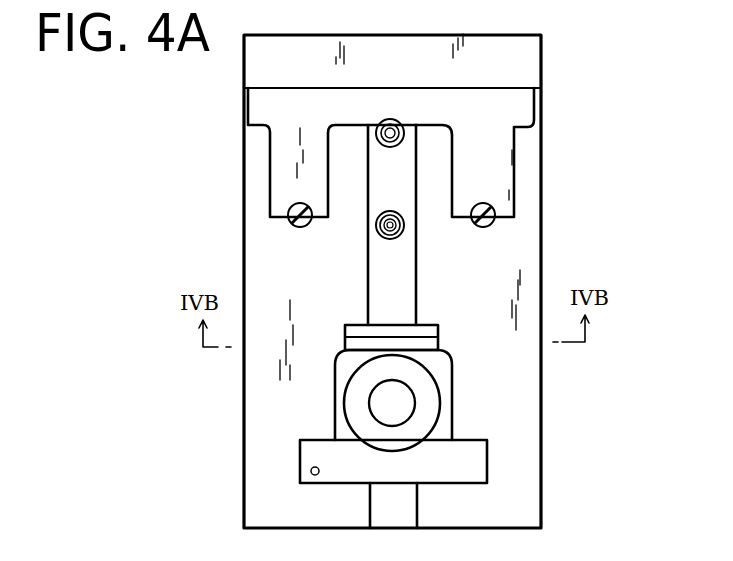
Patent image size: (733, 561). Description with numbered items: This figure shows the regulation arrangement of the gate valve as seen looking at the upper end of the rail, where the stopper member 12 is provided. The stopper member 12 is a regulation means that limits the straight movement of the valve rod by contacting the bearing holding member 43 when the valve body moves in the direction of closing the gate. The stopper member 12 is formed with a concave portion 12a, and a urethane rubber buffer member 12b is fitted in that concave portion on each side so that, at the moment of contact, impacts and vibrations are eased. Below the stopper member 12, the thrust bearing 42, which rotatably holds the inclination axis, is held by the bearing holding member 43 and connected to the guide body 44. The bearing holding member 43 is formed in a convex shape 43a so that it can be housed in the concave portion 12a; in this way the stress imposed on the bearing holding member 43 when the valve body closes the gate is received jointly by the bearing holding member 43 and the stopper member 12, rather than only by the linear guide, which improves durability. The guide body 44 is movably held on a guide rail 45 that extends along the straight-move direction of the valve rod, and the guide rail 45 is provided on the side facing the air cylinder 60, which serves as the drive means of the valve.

The stopper member 12 is at (500, 150).
The concave portion 12a is at (452, 150).
The urethane rubber buffer member 12b is at (300, 227).
The thrust bearing 42 is at (427, 402).
The bearing holding member 43 is at (460, 460).
The convex shape 43a is at (456, 363).
The guide body 44 is at (427, 342).
The guide rail 45 is at (403, 283).
The air cylinder 60 is at (523, 425).